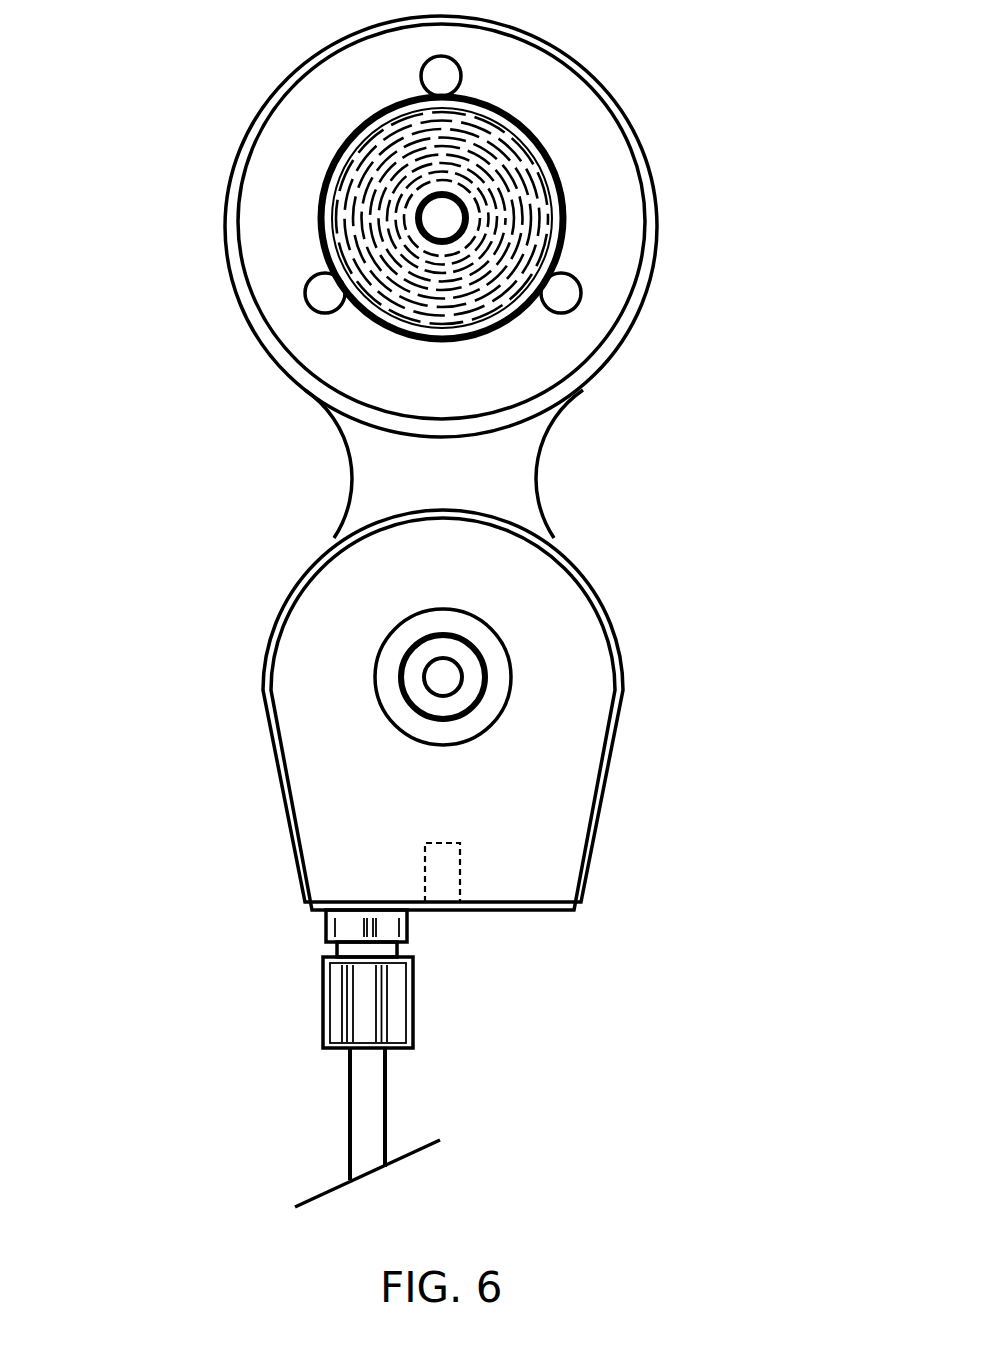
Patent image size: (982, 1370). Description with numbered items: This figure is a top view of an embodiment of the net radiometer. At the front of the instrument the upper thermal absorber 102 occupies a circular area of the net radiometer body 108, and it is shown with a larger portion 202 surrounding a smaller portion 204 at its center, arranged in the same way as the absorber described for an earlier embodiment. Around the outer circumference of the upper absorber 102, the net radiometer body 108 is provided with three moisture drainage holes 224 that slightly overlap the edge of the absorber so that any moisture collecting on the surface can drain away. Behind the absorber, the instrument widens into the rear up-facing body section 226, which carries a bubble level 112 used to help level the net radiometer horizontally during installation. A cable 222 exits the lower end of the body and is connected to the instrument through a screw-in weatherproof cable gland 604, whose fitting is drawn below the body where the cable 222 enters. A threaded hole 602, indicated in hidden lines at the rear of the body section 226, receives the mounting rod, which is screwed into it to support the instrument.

The upper thermal absorber 102 is at (350, 136).
The net radiometer body 108 is at (228, 178).
The bubble level 112 is at (488, 678).
The larger portion 202 is at (400, 320).
The smaller portion 204 is at (467, 220).
The cable 222 is at (348, 1142).
The moisture drainage holes 224 is at (462, 80).
The rear up-facing body section 226 is at (265, 700).
The threaded hole 602 is at (448, 907).
The connector 604 is at (322, 1013).